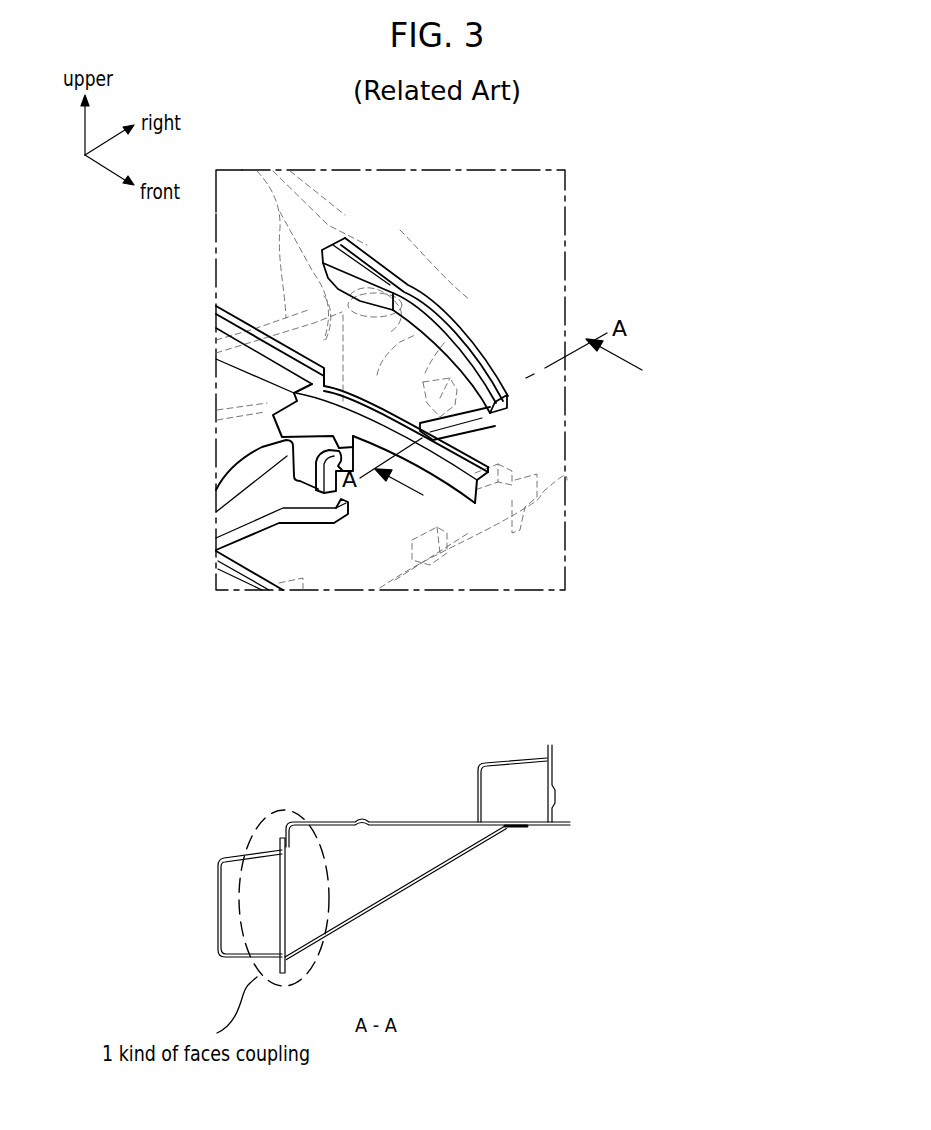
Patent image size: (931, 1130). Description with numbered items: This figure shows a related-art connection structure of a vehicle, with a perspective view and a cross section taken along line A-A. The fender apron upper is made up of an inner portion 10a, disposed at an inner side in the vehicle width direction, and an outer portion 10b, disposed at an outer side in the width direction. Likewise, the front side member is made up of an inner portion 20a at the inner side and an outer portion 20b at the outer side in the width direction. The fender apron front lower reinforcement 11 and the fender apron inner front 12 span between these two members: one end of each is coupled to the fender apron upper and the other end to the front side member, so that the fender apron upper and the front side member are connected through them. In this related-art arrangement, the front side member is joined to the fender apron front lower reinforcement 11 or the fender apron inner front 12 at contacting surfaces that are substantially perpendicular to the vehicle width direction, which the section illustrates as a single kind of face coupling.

The inner portion of fender apron upper 10a is at (434, 315).
The outer portion of fender apron upper 10b is at (511, 401).
The fender apron front lower reinforcement 11 is at (478, 436).
The fender apron inner front 12 is at (456, 395).
The inner portion of front side member 20a is at (460, 482).
The outer portion of front side member 20b is at (286, 903).